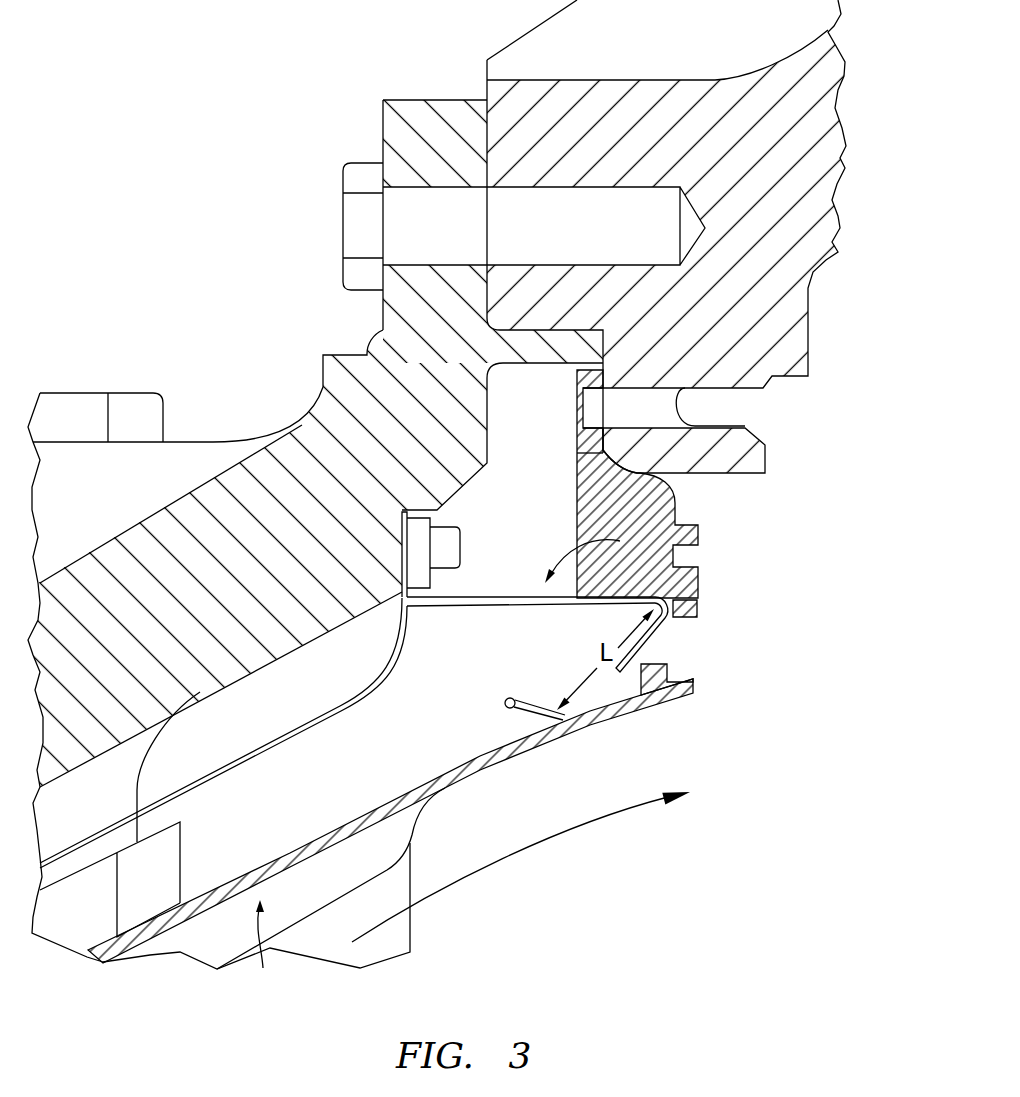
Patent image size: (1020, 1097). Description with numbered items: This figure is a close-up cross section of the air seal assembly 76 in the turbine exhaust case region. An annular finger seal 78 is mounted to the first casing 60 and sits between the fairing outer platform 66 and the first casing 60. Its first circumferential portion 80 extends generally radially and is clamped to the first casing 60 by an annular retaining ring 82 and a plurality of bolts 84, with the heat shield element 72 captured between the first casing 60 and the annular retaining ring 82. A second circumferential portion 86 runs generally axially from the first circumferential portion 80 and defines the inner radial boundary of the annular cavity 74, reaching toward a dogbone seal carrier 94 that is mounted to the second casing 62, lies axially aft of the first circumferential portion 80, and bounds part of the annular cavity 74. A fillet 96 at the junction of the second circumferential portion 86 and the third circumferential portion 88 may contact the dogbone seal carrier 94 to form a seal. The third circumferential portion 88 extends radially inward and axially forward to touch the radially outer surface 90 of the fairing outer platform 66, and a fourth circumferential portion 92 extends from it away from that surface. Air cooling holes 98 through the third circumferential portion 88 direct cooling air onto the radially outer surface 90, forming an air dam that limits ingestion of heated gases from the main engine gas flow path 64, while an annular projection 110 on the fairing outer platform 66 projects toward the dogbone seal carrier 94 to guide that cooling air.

The first casing 60 is at (332, 460).
The second casing 62 is at (797, 133).
The main engine gas flow path 64 is at (578, 830).
The fairing outer platform 66 is at (264, 950).
The heat shield element 72 is at (237, 757).
The annular cavity 74 is at (542, 494).
The air seal assembly 76 is at (653, 558).
The annular finger seal 78 is at (674, 640).
The first circumferential portion 80 is at (405, 550).
The annular retaining ring 82 is at (420, 527).
The bolts 84 is at (467, 556).
The second circumferential portion 86 is at (472, 617).
The third circumferential portion 88 is at (603, 690).
The radially outer surface 90 is at (323, 837).
The fourth circumferential portion 92 is at (530, 715).
The dogbone seal carrier 94 is at (640, 500).
The fillet 96 is at (680, 601).
The air cooling holes 98 is at (627, 686).
The annular projection 110 is at (668, 668).